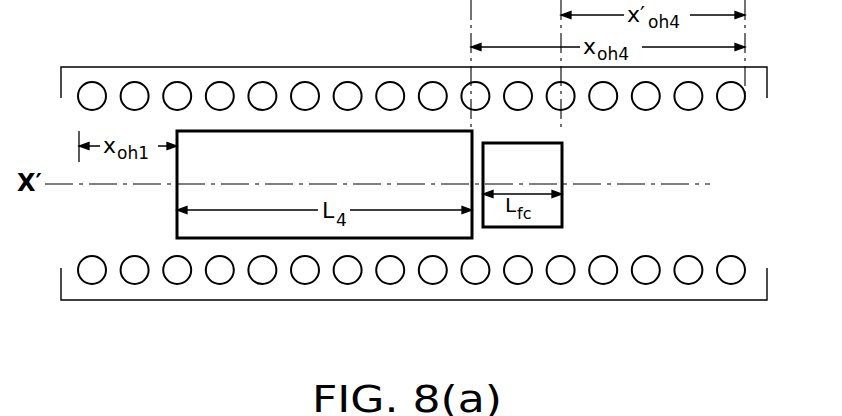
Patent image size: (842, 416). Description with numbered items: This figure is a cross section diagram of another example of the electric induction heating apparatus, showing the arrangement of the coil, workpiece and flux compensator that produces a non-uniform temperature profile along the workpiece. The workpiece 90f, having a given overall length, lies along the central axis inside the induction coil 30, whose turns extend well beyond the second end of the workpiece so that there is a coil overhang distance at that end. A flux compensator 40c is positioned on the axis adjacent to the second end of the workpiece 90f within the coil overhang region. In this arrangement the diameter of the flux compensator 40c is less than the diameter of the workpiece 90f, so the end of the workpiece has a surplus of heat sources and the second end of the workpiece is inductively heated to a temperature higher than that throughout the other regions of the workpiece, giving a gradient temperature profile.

The induction coil 30 is at (393, 67).
The workpiece 90f is at (357, 169).
The flux compensator 40c is at (542, 175).